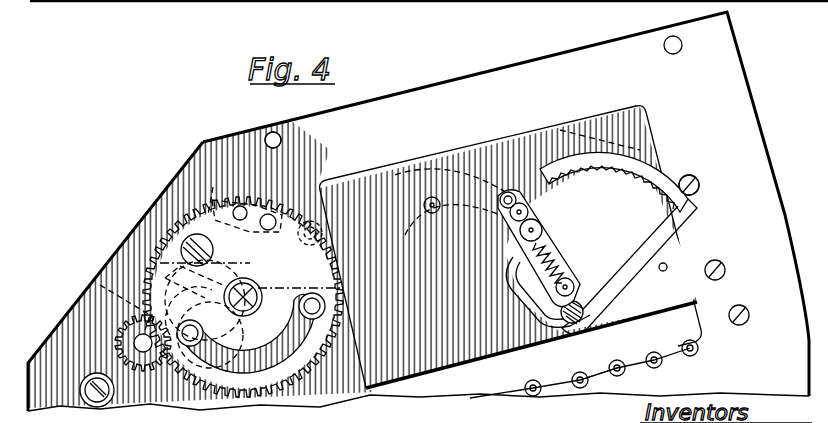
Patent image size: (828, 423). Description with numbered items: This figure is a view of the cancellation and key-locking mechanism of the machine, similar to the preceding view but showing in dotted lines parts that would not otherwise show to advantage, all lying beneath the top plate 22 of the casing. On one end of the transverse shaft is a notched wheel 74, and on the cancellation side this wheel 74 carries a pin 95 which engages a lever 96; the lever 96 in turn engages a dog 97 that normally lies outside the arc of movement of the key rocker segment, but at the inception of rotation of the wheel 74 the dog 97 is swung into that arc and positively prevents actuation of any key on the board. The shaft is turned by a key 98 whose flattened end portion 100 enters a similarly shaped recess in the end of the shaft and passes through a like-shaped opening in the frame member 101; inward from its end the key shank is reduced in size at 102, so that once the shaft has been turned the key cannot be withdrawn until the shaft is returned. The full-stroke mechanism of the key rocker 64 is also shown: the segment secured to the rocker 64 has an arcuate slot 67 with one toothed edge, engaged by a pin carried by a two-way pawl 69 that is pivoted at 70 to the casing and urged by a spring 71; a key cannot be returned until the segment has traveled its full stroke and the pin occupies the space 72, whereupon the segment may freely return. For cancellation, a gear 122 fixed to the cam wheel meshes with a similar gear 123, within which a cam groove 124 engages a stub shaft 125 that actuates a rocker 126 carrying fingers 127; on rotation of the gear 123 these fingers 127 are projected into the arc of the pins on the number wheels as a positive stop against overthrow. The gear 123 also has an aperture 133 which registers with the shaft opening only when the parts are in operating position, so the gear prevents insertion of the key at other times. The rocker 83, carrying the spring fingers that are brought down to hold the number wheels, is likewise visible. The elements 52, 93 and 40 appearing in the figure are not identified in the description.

The top plate 22 is at (452, 80).
The wheel 74 is at (151, 212).
The frame 52 is at (43, 349).
The frame member 101 is at (310, 174).
The gear 123 is at (243, 297).
The aperture 133 is at (250, 289).
The flattened end portion 100 is at (181, 250).
The cam groove 124 is at (262, 346).
The rocker 126 is at (190, 324).
The rocker 83 is at (293, 312).
The stub shaft 125 is at (325, 305).
The pin 95 is at (214, 187).
The fingers 127 is at (133, 311).
The reduced shank portion 102 is at (140, 362).
The gear 122 is at (96, 372).
The dog 97 is at (448, 158).
The lever 96 is at (433, 202).
The key 98 is at (600, 137).
The pin 93 is at (440, 214).
The arcuate slot 67 is at (590, 195).
The rocker 64 is at (530, 293).
The space 72 is at (662, 183).
The pivot 70 is at (536, 292).
The two-way pawl 69 is at (541, 210).
The spring 71 is at (563, 267).
The linkage 40 is at (622, 354).